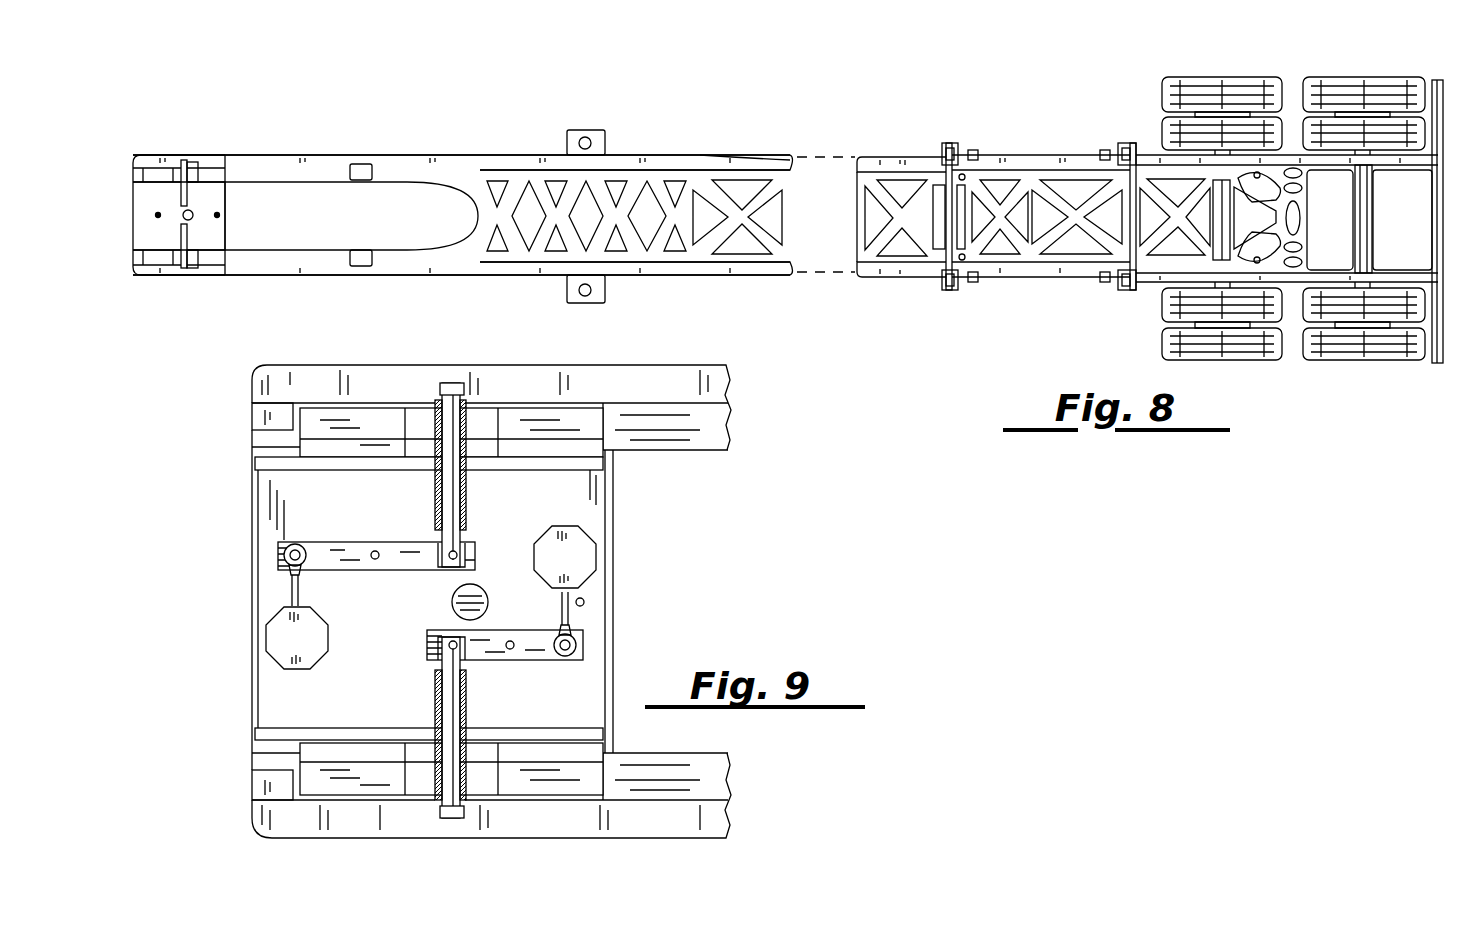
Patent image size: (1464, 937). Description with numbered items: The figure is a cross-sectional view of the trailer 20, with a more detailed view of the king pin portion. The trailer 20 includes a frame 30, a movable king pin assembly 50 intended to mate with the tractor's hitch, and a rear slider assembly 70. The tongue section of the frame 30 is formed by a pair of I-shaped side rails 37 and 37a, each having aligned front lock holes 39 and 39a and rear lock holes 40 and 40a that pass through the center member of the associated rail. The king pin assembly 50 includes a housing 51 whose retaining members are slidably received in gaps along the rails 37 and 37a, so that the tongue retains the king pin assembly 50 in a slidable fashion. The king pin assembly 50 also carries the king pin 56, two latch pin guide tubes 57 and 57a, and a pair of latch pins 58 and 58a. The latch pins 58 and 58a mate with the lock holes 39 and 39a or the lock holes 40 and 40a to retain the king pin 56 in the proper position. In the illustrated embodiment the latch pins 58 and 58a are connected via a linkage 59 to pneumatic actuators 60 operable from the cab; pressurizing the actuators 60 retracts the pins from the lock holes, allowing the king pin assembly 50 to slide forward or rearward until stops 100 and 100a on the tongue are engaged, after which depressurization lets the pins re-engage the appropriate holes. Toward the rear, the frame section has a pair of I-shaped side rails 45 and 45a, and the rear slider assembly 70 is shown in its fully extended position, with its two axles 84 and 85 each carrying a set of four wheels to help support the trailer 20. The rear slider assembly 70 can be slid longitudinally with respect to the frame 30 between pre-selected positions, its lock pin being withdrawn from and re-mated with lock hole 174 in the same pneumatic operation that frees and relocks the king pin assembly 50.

In FIG. 8, the trailer 20 is at (720, 126).
In FIG. 8, the frame 30 is at (690, 270).
In FIG. 9, the frame 30 is at (703, 431).
In FIG. 8, the side rail 37 is at (285, 153).
In FIG. 9, the side rail 37 is at (350, 380).
In FIG. 8, the side rail 37a is at (280, 268).
In FIG. 9, the side rail 37a is at (347, 827).
In FIG. 8, the front lock hole 39 is at (191, 180).
In FIG. 9, the front lock hole 39 is at (465, 390).
In FIG. 8, the front lock hole 39a is at (197, 258).
In FIG. 9, the front lock hole 39a is at (465, 815).
In FIG. 8, the rear lock hole 40 is at (373, 168).
In FIG. 8, the rear lock hole 40a is at (375, 260).
In FIG. 8, the side rail 45 is at (908, 155).
In FIG. 8, the side rail 45a is at (912, 278).
In FIG. 8, the king pin assembly 50 is at (179, 287).
In FIG. 9, the king pin assembly 50 is at (222, 619).
In FIG. 8, the housing 51 is at (153, 229).
In FIG. 8, the king pin 56 is at (195, 212).
In FIG. 9, the king pin 56 is at (485, 592).
In FIG. 9, the latch pin guide tube 57 is at (426, 500).
In FIG. 9, the latch pin guide tube 57a is at (426, 706).
In FIG. 9, the latch pin 58 is at (452, 503).
In FIG. 9, the latch pin 58a is at (455, 711).
In FIG. 9, the linkage 59 is at (405, 572).
In FIG. 9, the pneumatic actuator 60 is at (431, 597).
In FIG. 8, the rear slider assembly 70 is at (1073, 294).
In FIG. 8, the axle 84 is at (1300, 214).
In FIG. 8, the axle 85 is at (1373, 210).
In FIG. 9, the stop 100 is at (262, 420).
In FIG. 9, the stop 100a is at (262, 780).
In FIG. 8, the lock hole 174 is at (1259, 172).